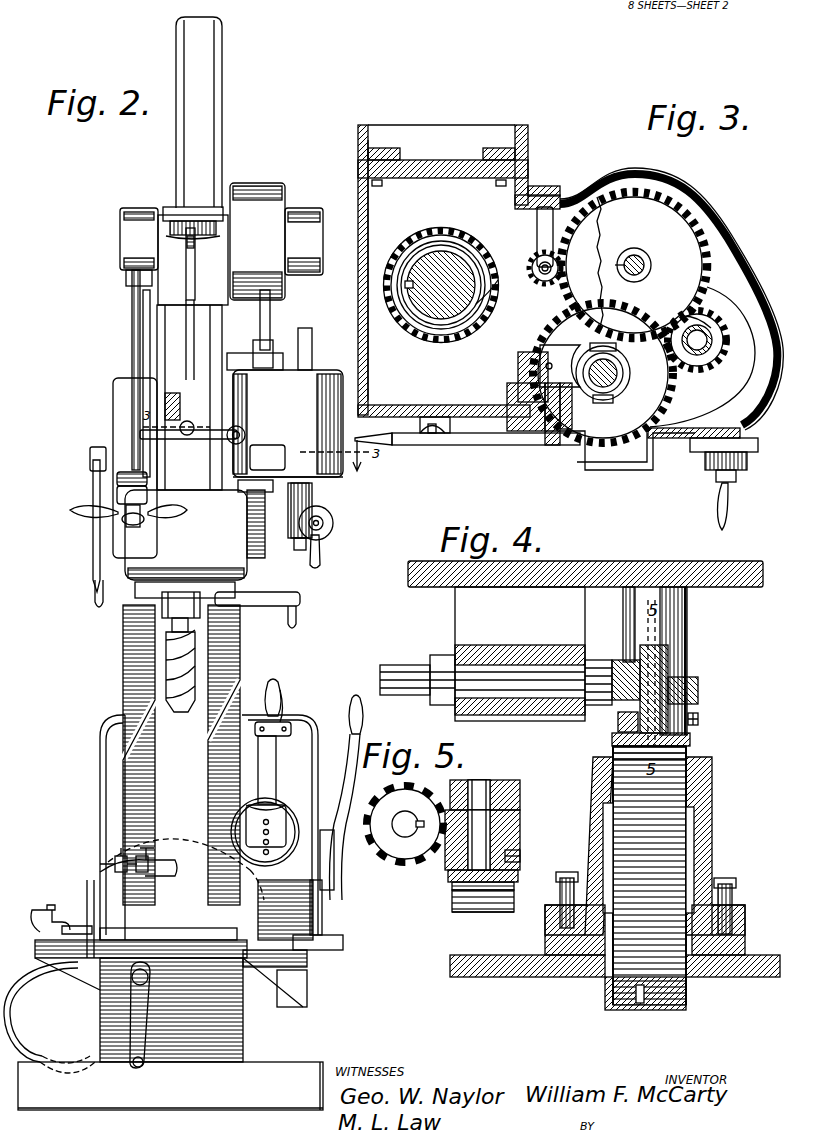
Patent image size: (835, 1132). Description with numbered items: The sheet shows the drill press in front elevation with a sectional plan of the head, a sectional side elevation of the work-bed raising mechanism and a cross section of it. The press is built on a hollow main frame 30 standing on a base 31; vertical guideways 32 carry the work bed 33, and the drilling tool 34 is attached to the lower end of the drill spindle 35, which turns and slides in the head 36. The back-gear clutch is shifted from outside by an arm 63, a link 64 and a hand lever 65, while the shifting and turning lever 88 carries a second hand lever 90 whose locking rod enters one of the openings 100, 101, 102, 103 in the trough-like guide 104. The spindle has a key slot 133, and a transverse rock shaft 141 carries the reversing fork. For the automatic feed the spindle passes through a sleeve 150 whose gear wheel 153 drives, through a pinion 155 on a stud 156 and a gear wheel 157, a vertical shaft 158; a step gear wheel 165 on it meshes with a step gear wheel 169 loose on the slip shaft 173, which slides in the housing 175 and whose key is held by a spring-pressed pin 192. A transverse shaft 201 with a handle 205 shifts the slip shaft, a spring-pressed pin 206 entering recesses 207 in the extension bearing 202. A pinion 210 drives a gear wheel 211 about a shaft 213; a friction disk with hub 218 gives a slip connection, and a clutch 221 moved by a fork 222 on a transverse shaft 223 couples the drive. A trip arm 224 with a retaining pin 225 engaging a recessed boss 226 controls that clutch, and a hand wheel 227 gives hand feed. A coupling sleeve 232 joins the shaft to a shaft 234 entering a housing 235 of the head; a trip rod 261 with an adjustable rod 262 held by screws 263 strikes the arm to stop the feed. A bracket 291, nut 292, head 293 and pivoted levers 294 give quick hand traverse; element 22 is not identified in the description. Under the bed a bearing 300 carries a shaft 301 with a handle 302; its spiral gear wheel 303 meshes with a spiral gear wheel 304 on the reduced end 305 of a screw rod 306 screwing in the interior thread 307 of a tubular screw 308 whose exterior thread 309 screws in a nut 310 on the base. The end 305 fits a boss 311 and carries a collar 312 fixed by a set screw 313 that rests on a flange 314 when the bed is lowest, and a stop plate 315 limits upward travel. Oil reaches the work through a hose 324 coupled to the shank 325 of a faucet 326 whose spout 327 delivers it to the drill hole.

In FIG. 2, the lever arm 22 is at (210, 442).
In FIG. 2, the main frame 30 is at (160, 644).
In FIG. 3, the main frame 30 is at (528, 135).
In FIG. 2, the base 31 is at (242, 1104).
In FIG. 4, the base 31 is at (503, 970).
In FIG. 2, the guideways 32 is at (208, 762).
In FIG. 2, the work bed 33 is at (172, 936).
In FIG. 4, the work bed 33 is at (625, 566).
In FIG. 2, the drilling tool 34 is at (172, 710).
In FIG. 2, the drill spindle 35 is at (192, 586).
In FIG. 3, the drill spindle 35 is at (436, 318).
In FIG. 2, the head 36 is at (168, 333).
In FIG. 3, the head 36 is at (368, 308).
In FIG. 2, the arm 63 is at (302, 972).
In FIG. 2, the link 64 is at (318, 932).
In FIG. 2, the hand lever 65 is at (350, 710).
In FIG. 2, the shifting and turning lever 88 is at (276, 762).
In FIG. 2, the hand lever 90 is at (284, 700).
In FIG. 2, the opening 100 is at (262, 852).
In FIG. 2, the opening 101 is at (262, 842).
In FIG. 2, the opening 102 is at (262, 832).
In FIG. 2, the opening 103 is at (262, 822).
In FIG. 2, the retainer or guide 104 is at (280, 808).
In FIG. 3, the key slot 133 is at (410, 284).
In FIG. 2, the rock shaft 141 is at (90, 455).
In FIG. 3, the sleeve 150 is at (400, 322).
In FIG. 3, the gear wheel 153 is at (494, 330).
In FIG. 3, the pinion 155 is at (532, 272).
In FIG. 3, the stud 156 is at (540, 262).
In FIG. 3, the gear wheel 157 is at (494, 310).
In FIG. 3, the shaft 158 is at (651, 266).
In FIG. 3, the step gear wheel 165 is at (705, 240).
In FIG. 3, the step gear wheel 169 is at (726, 336).
In FIG. 3, the slip shaft 173 is at (708, 320).
In FIG. 2, the housing 175 is at (315, 380).
In FIG. 2, the pin 192 is at (93, 544).
In FIG. 2, the shaft 201 is at (333, 522).
In FIG. 2, the bearing 202 is at (312, 490).
In FIG. 2, the handle 205 is at (322, 556).
In FIG. 3, the handle 205 is at (733, 492).
In FIG. 2, the spring pressed pin 206 is at (302, 552).
In FIG. 2, the recesses 207 is at (325, 528).
In FIG. 3, the pinion 210 is at (726, 350).
In FIG. 3, the gear wheel 211 is at (660, 390).
In FIG. 2, the shaft 213 is at (265, 512).
In FIG. 3, the shaft 213 is at (618, 396).
In FIG. 2, the hub 218 is at (132, 360).
In FIG. 3, the clutch 221 is at (630, 374).
In FIG. 3, the shifting fork 222 is at (540, 367).
In FIG. 2, the shaft 223 is at (248, 435).
In FIG. 3, the shaft 223 is at (552, 432).
In FIG. 3, the trip arm 224 is at (485, 445).
In FIG. 3, the retaining pin 225 is at (440, 420).
In FIG. 2, the recessed boss 226 is at (192, 421).
In FIG. 3, the recessed boss 226 is at (432, 438).
In FIG. 2, the hand wheel 227 is at (292, 606).
In FIG. 2, the coupling sleeve 232 is at (258, 350).
In FIG. 2, the shaft 234 is at (265, 318).
In FIG. 2, the housing 235 is at (256, 181).
In FIG. 2, the trip rod 261 is at (196, 245).
In FIG. 2, the extending rod 262 is at (190, 314).
In FIG. 2, the screws 263 is at (187, 244).
In FIG. 2, the bracket 291 is at (122, 489).
In FIG. 2, the nut 292 is at (117, 474).
In FIG. 2, the head 293 is at (138, 526).
In FIG. 2, the levers 294 is at (82, 513).
In FIG. 4, the bearing 300 is at (528, 710).
In FIG. 2, the shaft 301 is at (152, 974).
In FIG. 4, the shaft 301 is at (492, 700).
In FIG. 5, the shaft 301 is at (400, 834).
In FIG. 2, the handle 302 is at (150, 992).
In FIG. 4, the spiral gear wheel 303 is at (682, 658).
In FIG. 4, the spiral gear wheel 304 is at (698, 692).
In FIG. 5, the spiral gear wheel 304 is at (520, 828).
In FIG. 4, the reduced end 305 is at (675, 633).
In FIG. 5, the reduced end 305 is at (486, 790).
In FIG. 4, the screw rod 306 is at (690, 755).
In FIG. 5, the screw rod 306 is at (478, 910).
In FIG. 4, the interior thread 307 is at (705, 772).
In FIG. 5, the interior thread 307 is at (452, 905).
In FIG. 4, the tubular screw 308 is at (700, 840).
In FIG. 4, the exterior screw thread 309 is at (694, 818).
In FIG. 4, the nut 310 is at (712, 790).
In FIG. 4, the boss 311 is at (623, 609).
In FIG. 5, the boss 311 is at (520, 798).
In FIG. 4, the collar 312 is at (618, 718).
In FIG. 5, the collar 312 is at (448, 875).
In FIG. 4, the set screw 313 is at (700, 716).
In FIG. 5, the set screw 313 is at (520, 858).
In FIG. 4, the flange 314 is at (690, 740).
In FIG. 5, the flange 314 is at (452, 886).
In FIG. 4, the stop plate 315 is at (634, 1010).
In FIG. 2, the hose 324 is at (12, 1032).
In FIG. 2, the shank 325 is at (86, 884).
In FIG. 2, the faucet 326 is at (128, 872).
In FIG. 2, the discharge spout 327 is at (170, 862).